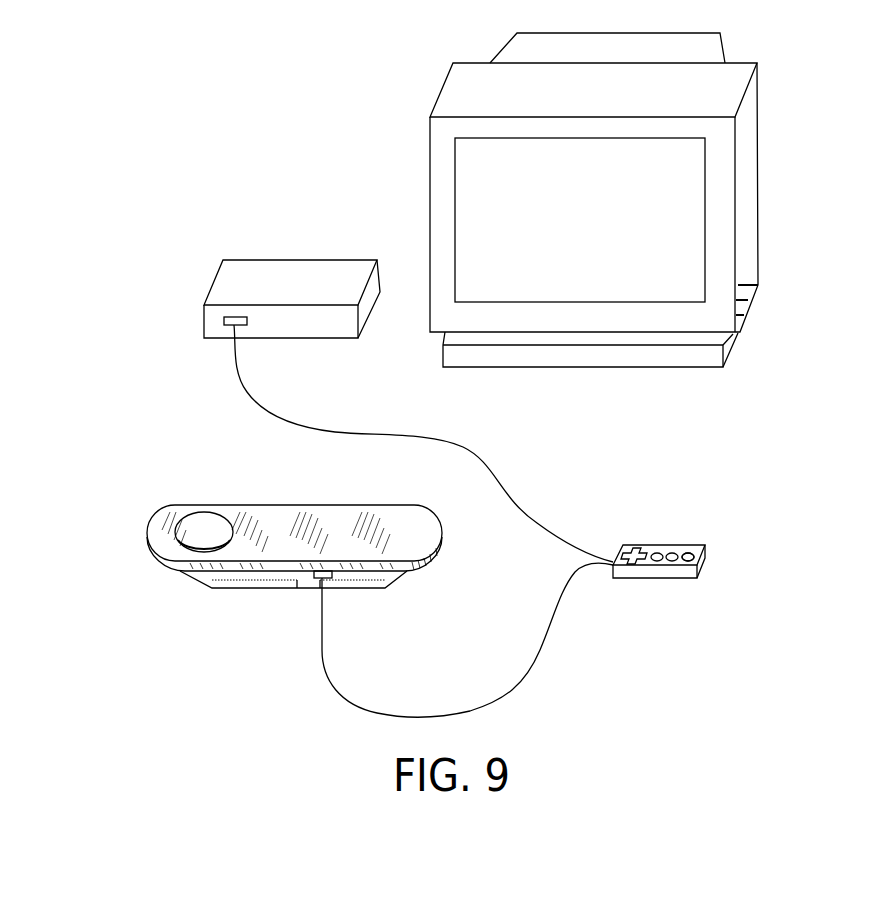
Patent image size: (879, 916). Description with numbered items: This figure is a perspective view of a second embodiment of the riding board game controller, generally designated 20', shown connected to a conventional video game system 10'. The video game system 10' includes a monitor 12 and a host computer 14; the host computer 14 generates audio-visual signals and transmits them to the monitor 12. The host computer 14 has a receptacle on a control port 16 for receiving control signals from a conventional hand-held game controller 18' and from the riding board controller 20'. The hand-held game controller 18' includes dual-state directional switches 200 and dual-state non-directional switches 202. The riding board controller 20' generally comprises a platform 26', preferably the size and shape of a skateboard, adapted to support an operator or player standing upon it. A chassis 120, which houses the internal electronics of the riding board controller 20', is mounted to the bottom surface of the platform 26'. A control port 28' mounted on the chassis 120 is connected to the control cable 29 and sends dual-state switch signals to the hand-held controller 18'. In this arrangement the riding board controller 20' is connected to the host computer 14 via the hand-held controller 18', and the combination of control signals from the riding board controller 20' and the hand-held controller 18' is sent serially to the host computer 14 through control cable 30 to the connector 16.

The video game system 10' is at (96, 161).
The monitor 12 is at (737, 70).
The host computer 14 is at (300, 270).
The control port 16 is at (224, 322).
The hand-held game controller 18' is at (650, 593).
The riding board controller 20' is at (272, 589).
The platform 26' is at (190, 493).
The control port 28' is at (302, 613).
The control cable 29 is at (495, 703).
The control cable 30 is at (508, 477).
The chassis 120 is at (173, 573).
The dual-state directional switches 200 is at (630, 575).
The dual-state non-directional switches 202 is at (690, 573).